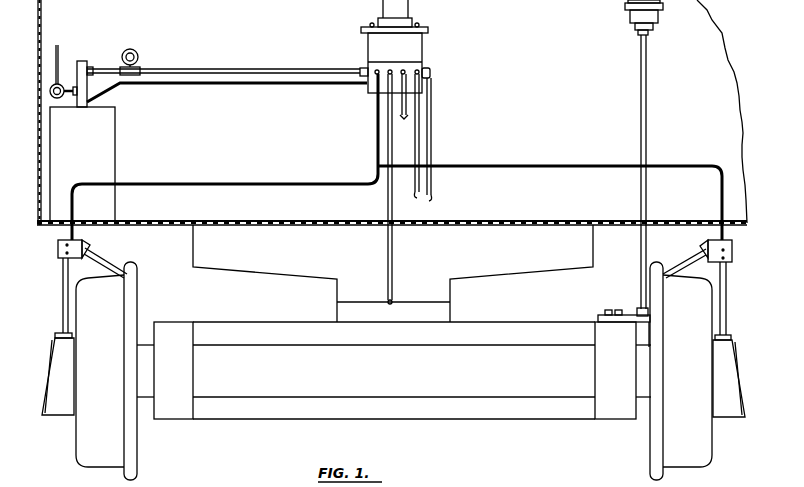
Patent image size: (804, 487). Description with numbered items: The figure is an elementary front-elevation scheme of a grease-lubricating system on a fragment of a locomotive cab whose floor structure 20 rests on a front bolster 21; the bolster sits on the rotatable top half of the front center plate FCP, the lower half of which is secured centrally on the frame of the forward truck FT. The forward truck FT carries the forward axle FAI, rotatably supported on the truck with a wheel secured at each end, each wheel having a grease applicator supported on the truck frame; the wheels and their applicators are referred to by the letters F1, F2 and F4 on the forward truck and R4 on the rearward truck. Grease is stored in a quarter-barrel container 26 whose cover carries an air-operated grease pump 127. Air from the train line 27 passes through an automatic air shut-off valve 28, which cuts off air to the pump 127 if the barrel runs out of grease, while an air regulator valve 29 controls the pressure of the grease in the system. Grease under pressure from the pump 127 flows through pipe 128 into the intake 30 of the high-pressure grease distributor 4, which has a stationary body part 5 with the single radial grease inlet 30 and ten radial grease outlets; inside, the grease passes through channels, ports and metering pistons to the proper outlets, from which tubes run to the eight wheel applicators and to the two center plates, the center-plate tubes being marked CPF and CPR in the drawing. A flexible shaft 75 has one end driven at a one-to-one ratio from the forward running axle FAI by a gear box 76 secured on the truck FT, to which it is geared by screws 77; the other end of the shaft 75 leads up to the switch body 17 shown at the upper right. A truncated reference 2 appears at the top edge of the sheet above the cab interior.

The vehicle body 2 is at (186, 5).
The high pressure grease distributor 4 is at (440, 42).
The stationary body part 5 is at (438, 72).
The switch body 17 is at (664, 24).
The floor structure 20 is at (528, 218).
The front bolster 21 is at (454, 260).
The quarter barrel container 26 is at (88, 145).
The train line 27 is at (58, 46).
The automatic air shut-off valve 28 is at (50, 91).
The air regulator valve 29 is at (130, 49).
The radial grease inlet 30 is at (365, 68).
The flexible shaft 75 is at (647, 130).
The gear box 76 is at (640, 335).
The screws 77 is at (608, 312).
The air operated grease pump 127 is at (80, 61).
The pipe 128 is at (214, 68).
The control pressure return line CPR is at (407, 108).
The control pressure feed line CPF is at (387, 205).
The forward truck wheel and grease applicator F1 is at (223, 184).
The forward truck wheel and grease applicator F2 is at (473, 166).
The forward truck wheel and grease applicator F4 is at (433, 184).
The rearward truck wheel and grease applicator R4 is at (423, 147).
The front center plate FCP is at (315, 302).
The forward truck FT is at (184, 378).
The forward axle FAI is at (331, 380).